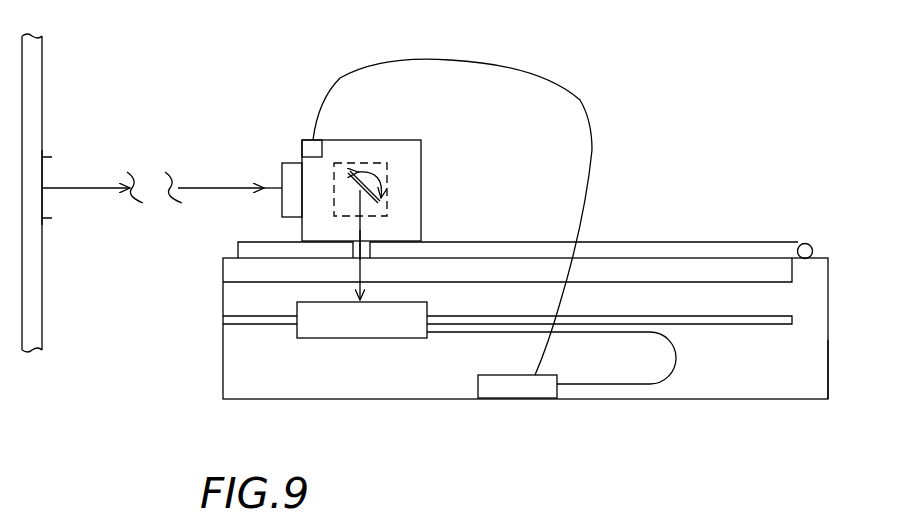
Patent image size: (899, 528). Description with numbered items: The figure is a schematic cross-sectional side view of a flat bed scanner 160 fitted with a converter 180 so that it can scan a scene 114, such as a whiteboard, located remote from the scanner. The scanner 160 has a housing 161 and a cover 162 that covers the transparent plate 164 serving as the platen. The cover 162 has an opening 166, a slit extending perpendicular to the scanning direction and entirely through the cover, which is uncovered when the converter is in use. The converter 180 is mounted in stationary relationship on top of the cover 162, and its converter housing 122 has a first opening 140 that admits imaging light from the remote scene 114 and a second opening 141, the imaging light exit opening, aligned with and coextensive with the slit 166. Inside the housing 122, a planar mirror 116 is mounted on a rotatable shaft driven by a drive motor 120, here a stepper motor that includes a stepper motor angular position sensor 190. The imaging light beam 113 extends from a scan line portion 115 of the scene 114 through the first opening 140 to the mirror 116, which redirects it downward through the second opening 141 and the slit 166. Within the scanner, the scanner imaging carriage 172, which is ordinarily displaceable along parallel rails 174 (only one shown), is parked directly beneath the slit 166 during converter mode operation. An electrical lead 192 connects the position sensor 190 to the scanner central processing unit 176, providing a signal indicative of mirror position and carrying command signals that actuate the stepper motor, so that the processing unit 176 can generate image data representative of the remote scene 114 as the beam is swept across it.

The imaging light beam 113 is at (208, 190).
The scene 114 is at (42, 107).
The scan line portion 115 is at (42, 187).
The planar mirror 116 is at (390, 205).
The drive motor 120 is at (397, 160).
The converter housing 122 is at (421, 173).
The first opening 140 is at (282, 163).
The second opening 141 is at (362, 226).
The flat bed scanner 160 is at (830, 323).
The housing 161 is at (828, 372).
The cover 162 is at (657, 242).
The transparent plate 164 is at (715, 270).
The opening 166 is at (352, 223).
The scanner imaging carriage 172 is at (338, 327).
The parallel rails 174 is at (747, 327).
The central processing unit 176 is at (515, 395).
The converter 180 is at (345, 140).
The stepper motor angular position sensor 190 is at (312, 137).
The electrical lead 192 is at (585, 112).